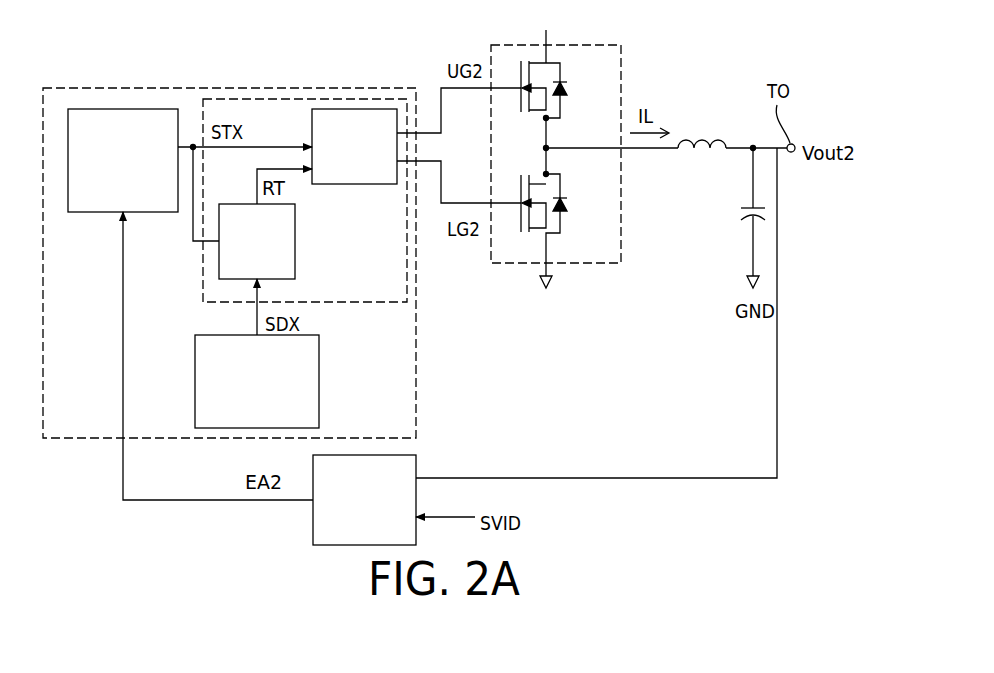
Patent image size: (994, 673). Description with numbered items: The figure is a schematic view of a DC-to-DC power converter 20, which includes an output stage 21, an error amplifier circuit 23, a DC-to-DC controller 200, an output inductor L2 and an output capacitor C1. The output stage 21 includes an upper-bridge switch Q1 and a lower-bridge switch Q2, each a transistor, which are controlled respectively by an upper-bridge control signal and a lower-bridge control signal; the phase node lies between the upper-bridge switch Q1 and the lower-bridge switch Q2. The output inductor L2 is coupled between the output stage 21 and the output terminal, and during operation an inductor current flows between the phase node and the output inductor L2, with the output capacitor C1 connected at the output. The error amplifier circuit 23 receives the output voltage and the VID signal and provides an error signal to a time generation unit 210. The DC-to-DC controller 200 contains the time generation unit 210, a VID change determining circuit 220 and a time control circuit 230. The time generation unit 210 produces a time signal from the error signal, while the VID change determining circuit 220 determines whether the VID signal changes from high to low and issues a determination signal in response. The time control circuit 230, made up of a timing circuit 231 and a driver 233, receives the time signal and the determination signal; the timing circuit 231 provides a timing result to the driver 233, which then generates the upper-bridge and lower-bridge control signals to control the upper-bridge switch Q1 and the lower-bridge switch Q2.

The DC-to-DC power converter 20 is at (745, 541).
The DC-to-DC controller 200 is at (416, 333).
The time generation unit 210 is at (135, 108).
The time control circuit 230 is at (283, 88).
The driver 233 is at (355, 108).
The timing circuit 231 is at (295, 241).
The VID change determining circuit 220 is at (319, 372).
The error amplifier circuit 23 is at (416, 462).
The output stage 21 is at (622, 68).
The upper-bridge switch Q1 is at (538, 105).
The lower-bridge switch Q2 is at (538, 212).
The output inductor L2 is at (702, 128).
The output capacitor C1 is at (738, 212).